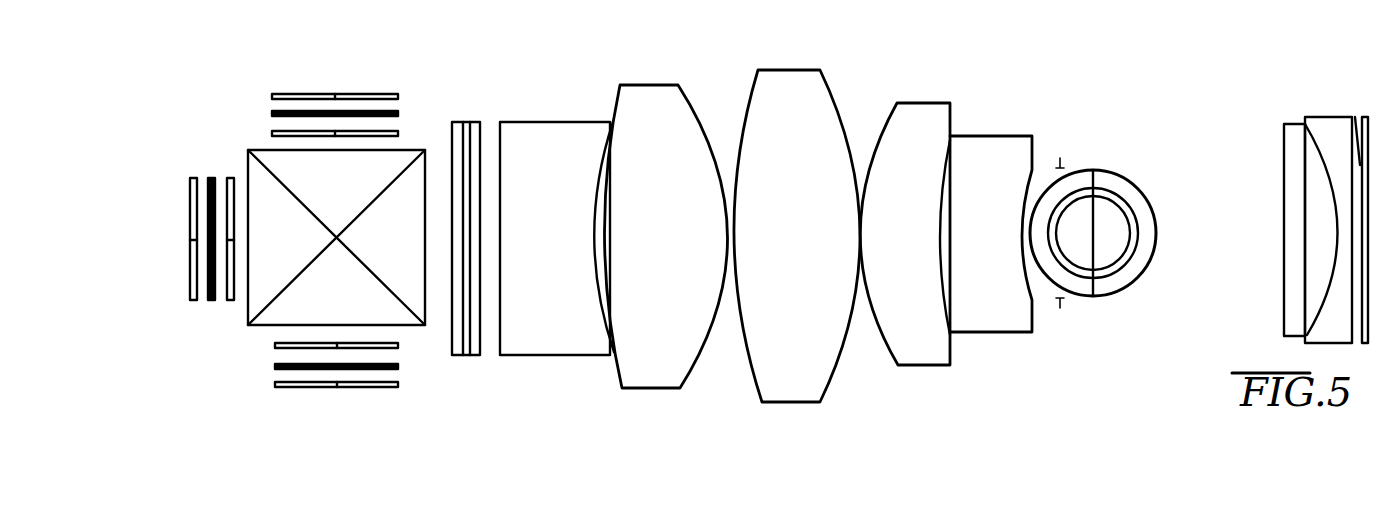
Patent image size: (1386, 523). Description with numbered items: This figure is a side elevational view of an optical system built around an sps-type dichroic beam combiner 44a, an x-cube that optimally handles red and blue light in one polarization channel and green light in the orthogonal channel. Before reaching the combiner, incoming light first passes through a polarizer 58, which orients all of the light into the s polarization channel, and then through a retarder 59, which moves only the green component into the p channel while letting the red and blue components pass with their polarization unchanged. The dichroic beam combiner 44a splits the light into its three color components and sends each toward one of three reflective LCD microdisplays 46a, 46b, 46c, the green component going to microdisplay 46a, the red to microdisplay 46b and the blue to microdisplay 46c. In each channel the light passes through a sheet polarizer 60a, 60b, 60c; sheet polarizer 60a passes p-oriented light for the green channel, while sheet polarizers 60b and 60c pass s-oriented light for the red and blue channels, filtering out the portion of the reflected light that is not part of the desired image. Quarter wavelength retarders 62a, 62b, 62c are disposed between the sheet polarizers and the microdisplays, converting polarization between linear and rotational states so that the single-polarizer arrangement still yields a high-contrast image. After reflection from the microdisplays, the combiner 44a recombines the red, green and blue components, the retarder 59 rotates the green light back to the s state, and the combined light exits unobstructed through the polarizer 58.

The sps-type dichroic beam combiner 44a is at (267, 157).
The LCD microdisplay 46a is at (191, 180).
The sheet polarizer 60a is at (228, 177).
The quarter wavelength retarder 62a is at (210, 177).
The LCD microdisplay 46b is at (275, 386).
The sheet polarizer 60b is at (275, 345).
The quarter wavelength retarder 62b is at (275, 366).
The LCD microdisplay 46c is at (352, 94).
The sheet polarizer 60c is at (400, 131).
The quarter wavelength retarder 62c is at (402, 112).
The polarizer 58 is at (471, 343).
The retarder 59 is at (456, 345).